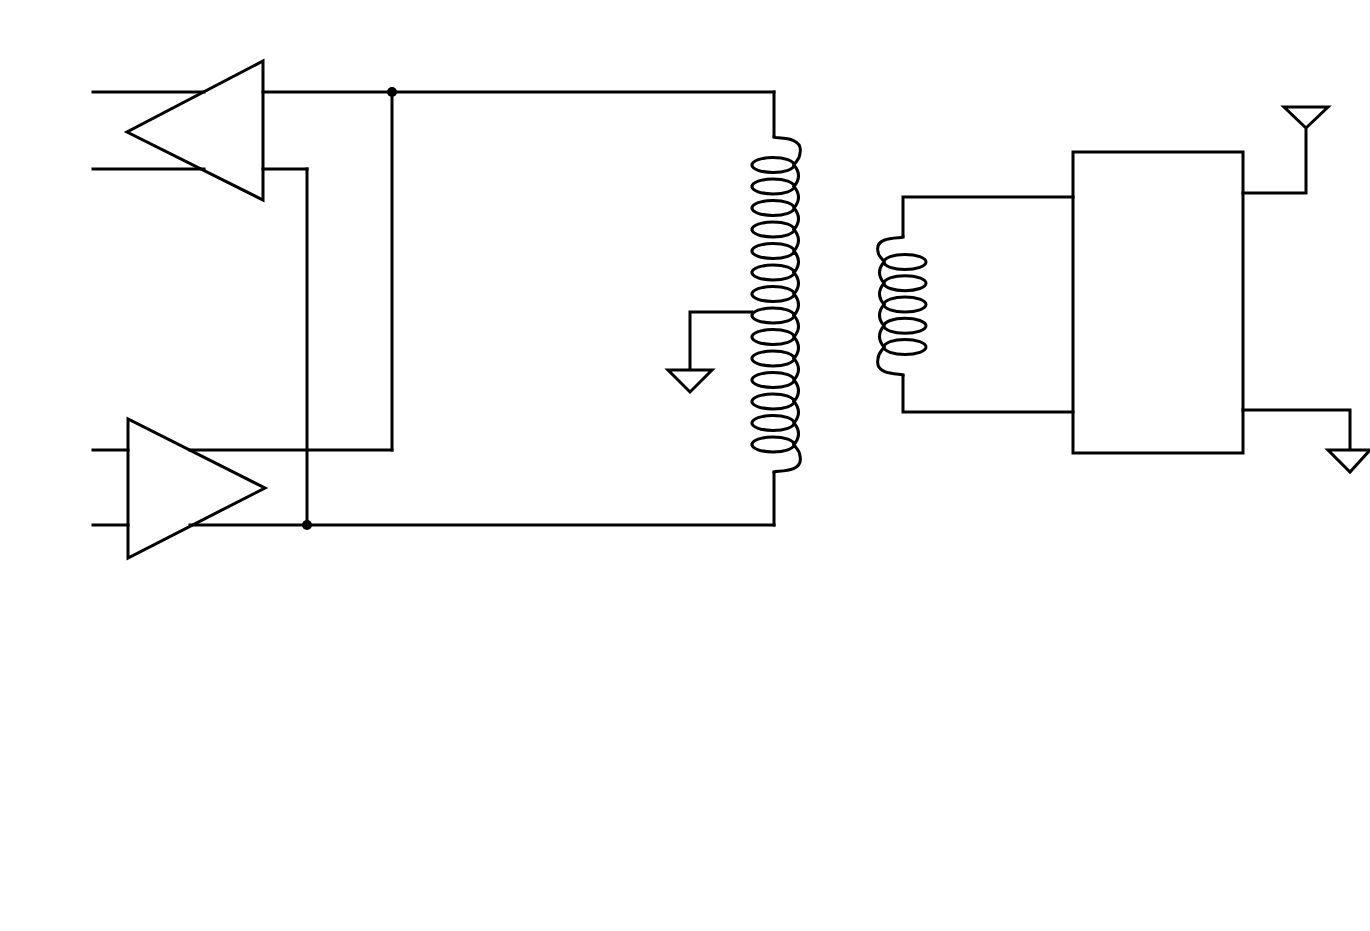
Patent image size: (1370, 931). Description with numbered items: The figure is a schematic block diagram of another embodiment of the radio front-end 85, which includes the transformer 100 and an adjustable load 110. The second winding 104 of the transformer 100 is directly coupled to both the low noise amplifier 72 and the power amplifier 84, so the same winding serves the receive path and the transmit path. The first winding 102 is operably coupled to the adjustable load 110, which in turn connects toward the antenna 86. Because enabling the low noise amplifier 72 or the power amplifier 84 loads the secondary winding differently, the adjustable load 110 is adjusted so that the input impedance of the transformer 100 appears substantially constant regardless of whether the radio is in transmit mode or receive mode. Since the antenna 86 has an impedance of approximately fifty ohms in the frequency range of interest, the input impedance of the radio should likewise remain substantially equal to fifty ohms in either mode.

The low noise amplifier 72 is at (242, 130).
The power amplifier 84 is at (242, 488).
The radio front-end 85 is at (731, 427).
The antenna 86 is at (1285, 130).
The transformer 100 is at (858, 296).
The first winding 102 is at (975, 264).
The second winding 104 is at (721, 271).
The adjustable load 110 is at (1158, 302).